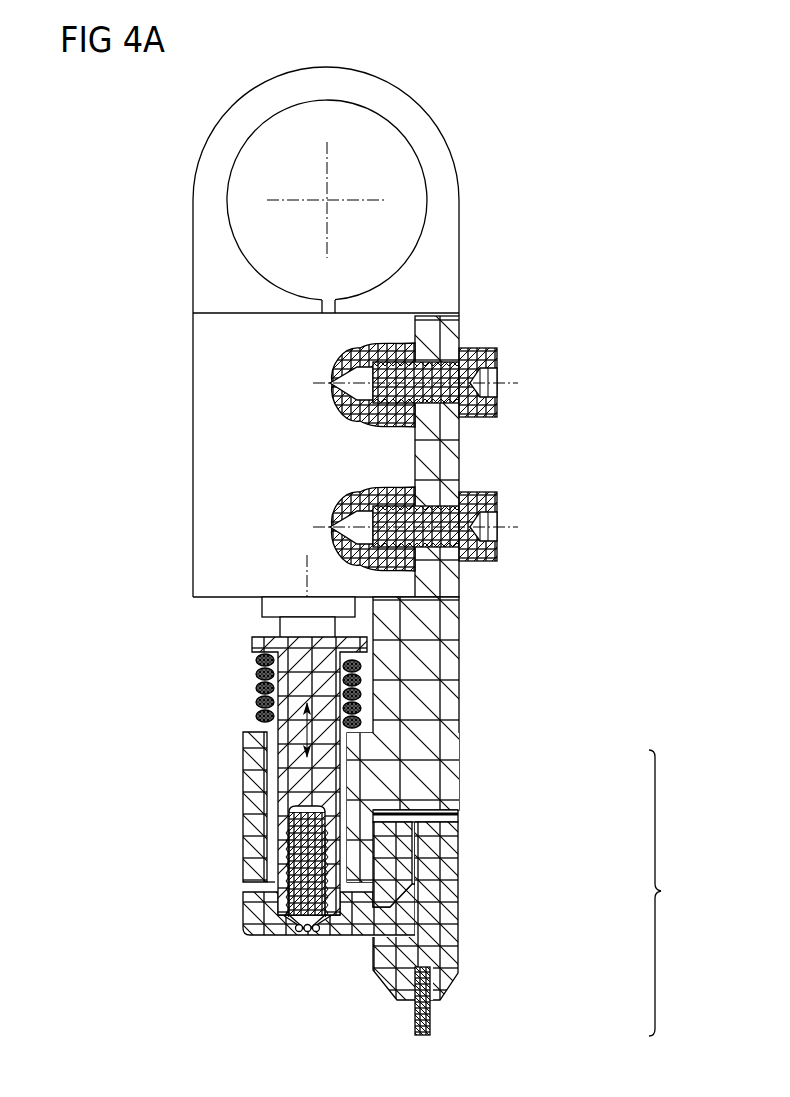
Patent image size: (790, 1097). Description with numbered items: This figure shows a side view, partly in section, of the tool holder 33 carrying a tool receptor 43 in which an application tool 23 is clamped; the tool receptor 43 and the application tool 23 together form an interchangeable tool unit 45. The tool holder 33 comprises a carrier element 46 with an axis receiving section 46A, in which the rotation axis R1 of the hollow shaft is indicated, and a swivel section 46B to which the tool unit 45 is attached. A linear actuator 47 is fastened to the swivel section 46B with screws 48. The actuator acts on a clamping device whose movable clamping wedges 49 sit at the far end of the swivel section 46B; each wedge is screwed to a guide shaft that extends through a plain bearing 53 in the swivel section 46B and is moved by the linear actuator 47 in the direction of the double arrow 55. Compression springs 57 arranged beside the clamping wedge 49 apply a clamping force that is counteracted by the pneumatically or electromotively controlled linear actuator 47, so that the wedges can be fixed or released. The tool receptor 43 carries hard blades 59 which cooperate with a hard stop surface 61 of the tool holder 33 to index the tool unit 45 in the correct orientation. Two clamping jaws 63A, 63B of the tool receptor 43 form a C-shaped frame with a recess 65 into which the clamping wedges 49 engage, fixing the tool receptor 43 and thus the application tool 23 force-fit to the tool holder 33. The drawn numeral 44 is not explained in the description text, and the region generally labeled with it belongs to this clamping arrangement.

The rotation axis R1 is at (330, 197).
The application tool 23 is at (434, 1012).
The tool holder 33 is at (113, 383).
The tool receptor 43 is at (559, 854).
The clamping device 44 is at (141, 785).
The tool unit 45 is at (668, 893).
The carrier element 46 is at (446, 656).
The axis receiving section 46A is at (553, 234).
The swivel section 46B is at (553, 691).
The linear actuator 47 is at (243, 353).
The screws 48 is at (497, 422).
The clamping wedge 49 is at (372, 928).
The plain bearing 53 is at (268, 805).
The double arrow 55 is at (287, 654).
The compression spring 57 is at (252, 702).
The hard blade 59 is at (431, 805).
The hard stop surface 61 is at (463, 815).
The clamping jaw 63A is at (420, 833).
The clamping jaw 63B is at (447, 878).
The recess 65 is at (396, 957).